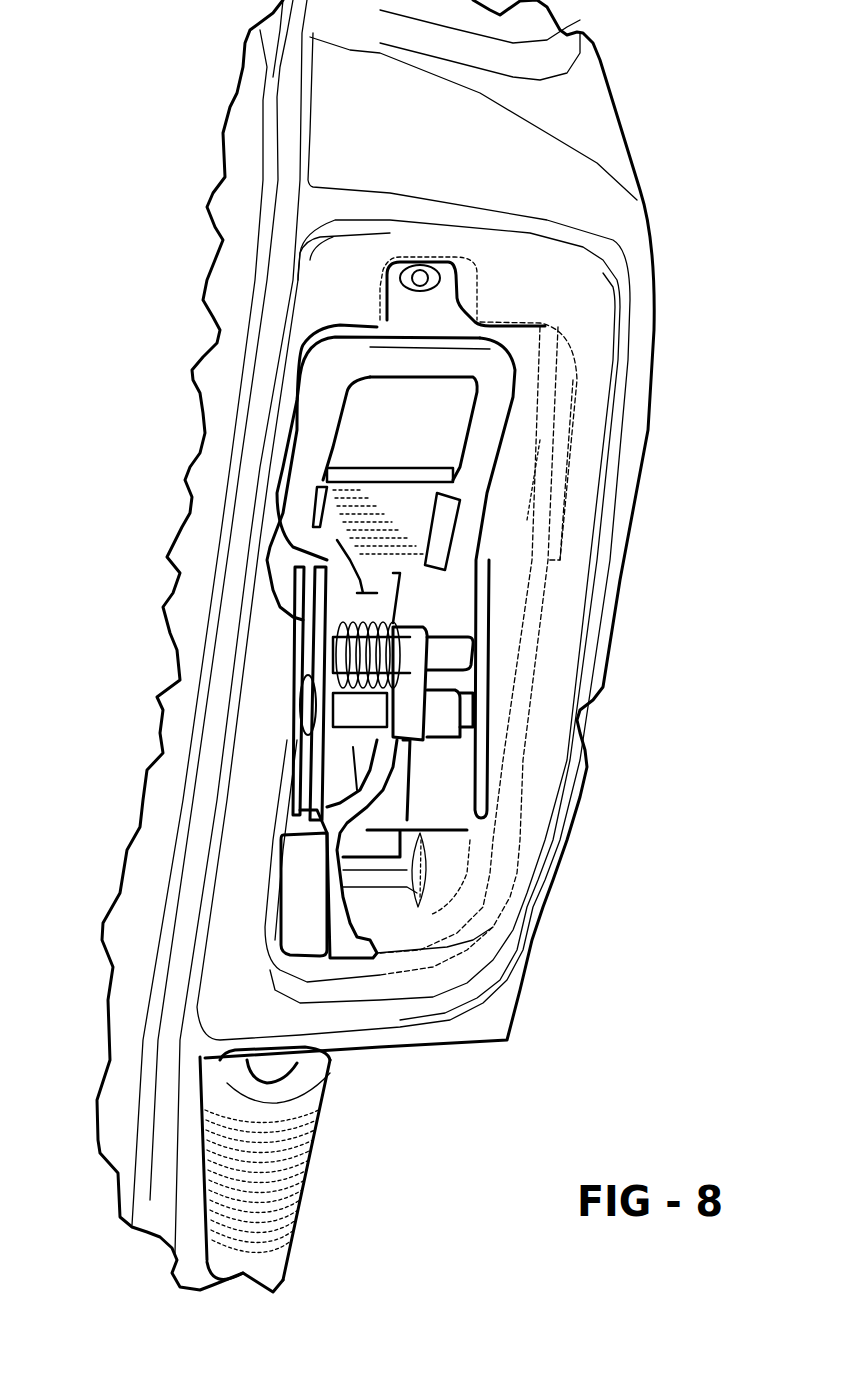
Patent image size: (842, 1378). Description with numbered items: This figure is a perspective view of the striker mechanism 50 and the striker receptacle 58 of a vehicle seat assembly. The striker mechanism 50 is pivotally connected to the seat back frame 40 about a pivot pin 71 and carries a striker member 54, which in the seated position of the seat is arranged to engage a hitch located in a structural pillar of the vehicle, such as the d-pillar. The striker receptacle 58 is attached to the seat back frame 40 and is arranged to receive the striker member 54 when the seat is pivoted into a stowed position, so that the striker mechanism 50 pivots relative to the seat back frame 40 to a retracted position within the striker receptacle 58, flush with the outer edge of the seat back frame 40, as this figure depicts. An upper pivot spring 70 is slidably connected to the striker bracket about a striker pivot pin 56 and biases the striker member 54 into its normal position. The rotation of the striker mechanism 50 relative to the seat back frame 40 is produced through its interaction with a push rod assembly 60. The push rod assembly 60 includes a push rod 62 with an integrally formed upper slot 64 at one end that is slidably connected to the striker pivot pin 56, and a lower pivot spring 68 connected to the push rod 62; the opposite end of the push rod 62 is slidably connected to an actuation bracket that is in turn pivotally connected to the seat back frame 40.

The seat back frame 40 is at (620, 218).
The striker member 54 is at (497, 370).
The striker mechanism 50 is at (510, 423).
The striker receptacle 58 is at (523, 510).
The upper slot 64 is at (420, 645).
The striker pivot pin 56 is at (470, 707).
The push rod assembly 60 is at (413, 761).
The push rod 62 is at (400, 787).
The upper pivot spring 70 is at (370, 708).
The pivot pin 71 is at (350, 650).
The lower pivot spring 68 is at (303, 1167).